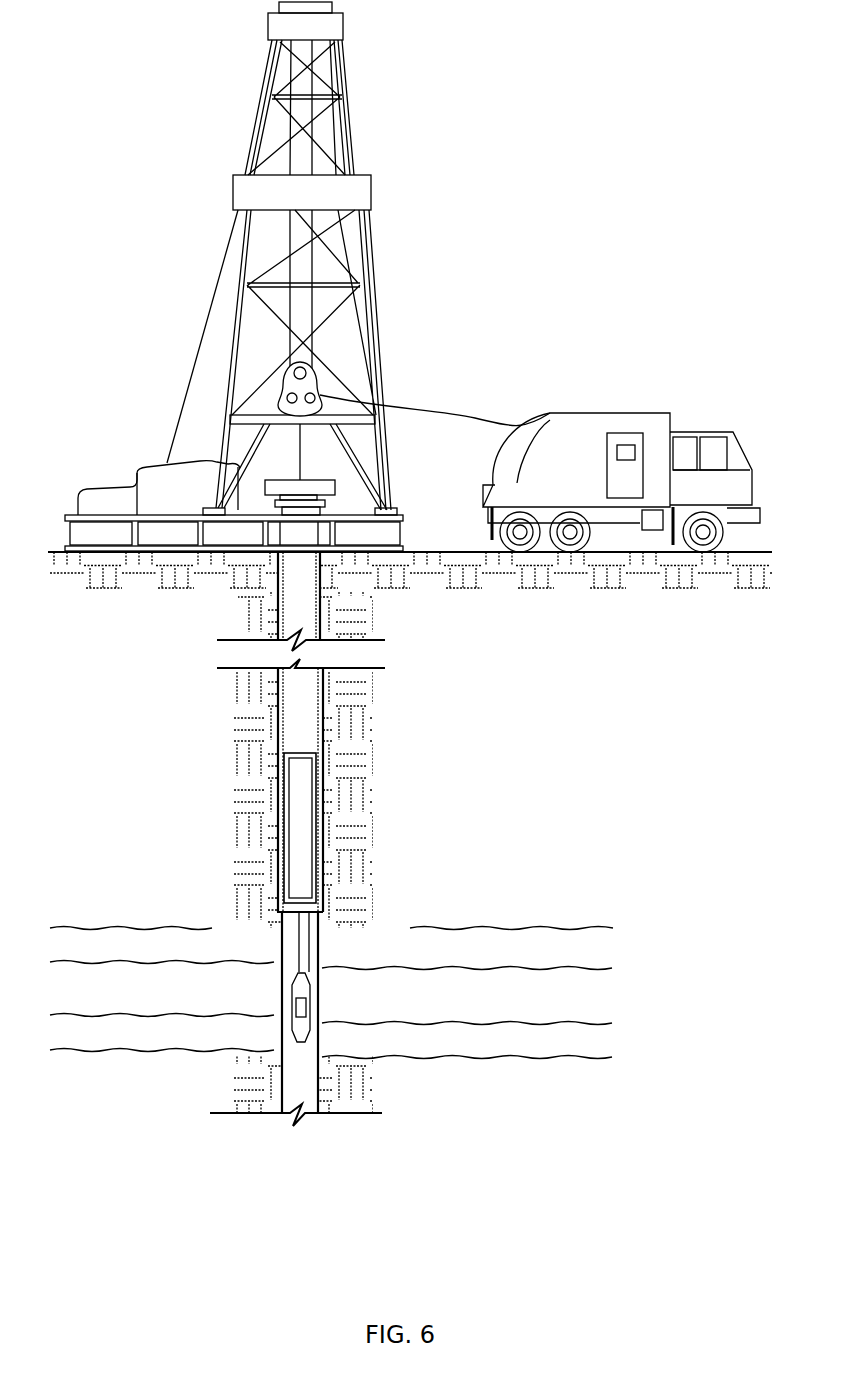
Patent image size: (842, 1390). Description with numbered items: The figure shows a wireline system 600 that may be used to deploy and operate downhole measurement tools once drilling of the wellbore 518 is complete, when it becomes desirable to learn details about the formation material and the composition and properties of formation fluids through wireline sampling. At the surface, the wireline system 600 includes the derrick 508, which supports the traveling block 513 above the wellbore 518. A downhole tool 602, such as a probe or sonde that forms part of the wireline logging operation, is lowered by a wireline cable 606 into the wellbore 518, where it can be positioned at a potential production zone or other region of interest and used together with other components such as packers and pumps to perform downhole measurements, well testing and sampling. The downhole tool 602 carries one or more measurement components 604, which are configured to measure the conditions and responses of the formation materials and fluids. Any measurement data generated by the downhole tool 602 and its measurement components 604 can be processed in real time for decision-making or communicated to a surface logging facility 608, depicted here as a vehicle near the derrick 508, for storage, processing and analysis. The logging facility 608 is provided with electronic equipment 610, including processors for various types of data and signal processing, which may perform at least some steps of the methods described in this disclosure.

The wireline system 600 is at (538, 152).
The derrick 508 is at (395, 507).
The traveling block 513 is at (320, 368).
The wireline cable 606 is at (433, 410).
The surface logging facility 608 is at (570, 418).
The electronic equipment 610 is at (627, 443).
The wellbore 518 is at (280, 943).
The downhole tool 602 is at (318, 972).
The measurement components 604 is at (308, 1007).